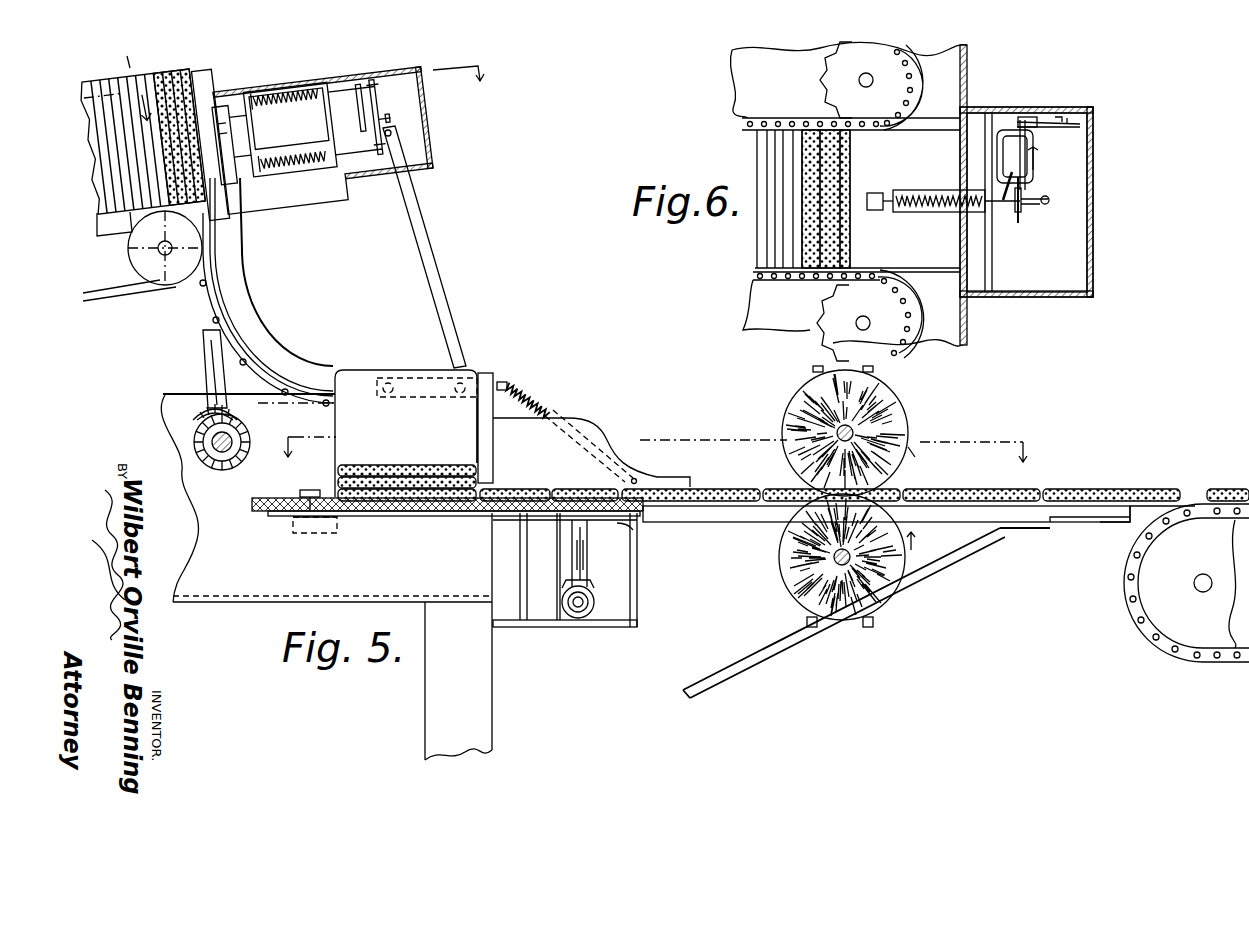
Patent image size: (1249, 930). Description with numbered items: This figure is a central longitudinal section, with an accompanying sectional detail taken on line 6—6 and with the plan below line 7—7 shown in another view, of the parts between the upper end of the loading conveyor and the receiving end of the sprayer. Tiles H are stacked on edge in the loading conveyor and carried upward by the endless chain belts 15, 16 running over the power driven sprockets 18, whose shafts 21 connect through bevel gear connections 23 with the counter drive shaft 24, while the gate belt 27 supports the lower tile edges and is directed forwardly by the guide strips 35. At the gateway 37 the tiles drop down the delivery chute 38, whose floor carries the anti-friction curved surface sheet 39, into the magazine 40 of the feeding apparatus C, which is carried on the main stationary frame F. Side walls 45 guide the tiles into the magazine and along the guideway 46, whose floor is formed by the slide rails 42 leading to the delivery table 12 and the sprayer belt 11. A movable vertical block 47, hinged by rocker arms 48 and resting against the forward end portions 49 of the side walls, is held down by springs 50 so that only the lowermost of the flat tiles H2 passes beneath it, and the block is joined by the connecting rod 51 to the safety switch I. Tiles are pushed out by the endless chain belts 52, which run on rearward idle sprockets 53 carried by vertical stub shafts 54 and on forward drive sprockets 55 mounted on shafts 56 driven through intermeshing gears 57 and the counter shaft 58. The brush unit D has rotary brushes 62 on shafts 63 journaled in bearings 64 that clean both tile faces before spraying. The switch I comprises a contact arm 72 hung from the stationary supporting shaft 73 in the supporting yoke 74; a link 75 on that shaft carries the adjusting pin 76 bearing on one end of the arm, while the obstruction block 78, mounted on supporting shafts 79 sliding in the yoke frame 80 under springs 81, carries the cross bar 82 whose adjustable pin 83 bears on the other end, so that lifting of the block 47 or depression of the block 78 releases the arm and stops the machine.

In FIG. 5, the section line 6— 6 is at (309, 57).
In FIG. 5, the section line 7— 7 is at (658, 440).
In FIG. 5, the endless belt 11 is at (1190, 500).
In FIG. 5, the delivery table 12 is at (1103, 510).
In FIG. 6, the endless chain belt 15 is at (772, 121).
In FIG. 6, the endless chain belt 16 is at (783, 277).
In FIG. 6, the power driven sprockets 18 is at (870, 201).
In FIG. 5, the power driven shafts 21 is at (210, 366).
In FIG. 6, the power driven shafts 21 is at (872, 77).
In FIG. 5, the bevel gear connections 23 is at (207, 423).
In FIG. 5, the counter drive shaft 24 is at (203, 434).
In FIG. 5, the gate belt 27 is at (121, 303).
In FIG. 5, the guide strips 35 is at (190, 217).
In FIG. 5, the gateway 37 is at (212, 183).
In FIG. 5, the delivery chute 38 is at (225, 297).
In FIG. 5, the curved surface sheet 39 is at (232, 327).
In FIG. 5, the magazine 40 is at (406, 433).
In FIG. 5, the slide rails 42 is at (1088, 508).
In FIG. 5, the side walls 45 is at (362, 370).
In FIG. 5, the guideway 46 is at (713, 497).
In FIG. 5, the movable vertical block 47 is at (493, 450).
In FIG. 5, the rocker arms 48 is at (423, 380).
In FIG. 5, the forward end portions 49 is at (477, 425).
In FIG. 5, the springs 50 is at (530, 400).
In FIG. 5, the connecting rod 51 is at (425, 262).
In FIG. 6, the connecting rod 51 is at (1067, 118).
In FIG. 5, the endless chain belts 52 is at (462, 512).
In FIG. 5, the rearward idle sprockets 53 is at (278, 517).
In FIG. 5, the vertical stub shafts 54 is at (308, 490).
In FIG. 5, the forward drive sprockets 55 is at (617, 523).
In FIG. 5, the shafts 56 is at (587, 557).
In FIG. 5, the intermeshing gears 57 is at (585, 608).
In FIG. 5, the counter shaft 58 is at (577, 607).
In FIG. 5, the rotary brushes 62 is at (870, 417).
In FIG. 5, the shafts 63 is at (857, 427).
In FIG. 5, the bearings 64 is at (900, 505).
In FIG. 5, the contact arm 72 is at (350, 108).
In FIG. 6, the contact arm 72 is at (1003, 200).
In FIG. 6, the stationary supporting shaft 73 is at (1035, 148).
In FIG. 6, the supporting yoke 74 is at (1007, 130).
In FIG. 6, the link 75 is at (1080, 127).
In FIG. 6, the adjusting pin 76 is at (1030, 117).
In FIG. 5, the obstruction block 78 is at (221, 106).
In FIG. 6, the obstruction block 78 is at (878, 192).
In FIG. 5, the supporting shafts 79 is at (290, 100).
In FIG. 6, the supporting shafts 79 is at (920, 212).
In FIG. 5, the yoke frame 80 is at (260, 97).
In FIG. 6, the yoke frame 80 is at (917, 190).
In FIG. 5, the springs 81 is at (307, 105).
In FIG. 6, the springs 81 is at (940, 210).
In FIG. 5, the cross bar 82 is at (367, 87).
In FIG. 6, the cross bar 82 is at (1021, 217).
In FIG. 5, the adjustable pin 83 is at (392, 121).
In FIG. 6, the adjustable pin 83 is at (1050, 198).
In FIG. 5, the feeding apparatus C is at (360, 535).
In FIG. 5, the power driven brush unit D is at (792, 410).
In FIG. 5, the main stationary frame F is at (279, 600).
In FIG. 5, the tiles H is at (178, 68).
In FIG. 6, the tiles H is at (755, 243).
In FIG. 5, the stack of blanks on conveyor H2 is at (406, 492).
In FIG. 5, the double actuated switch I is at (378, 110).
In FIG. 6, the double actuated switch I is at (1035, 164).